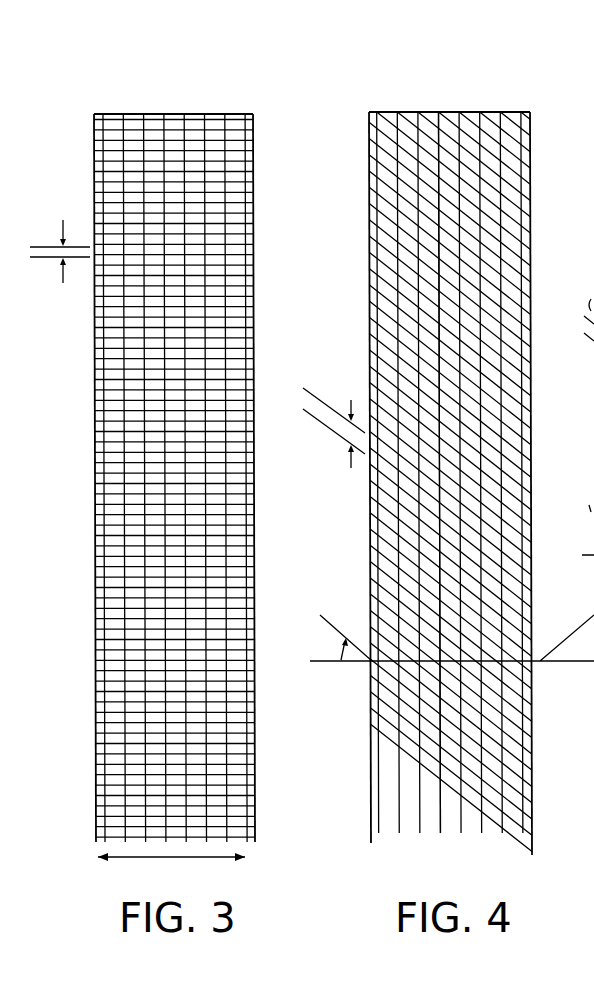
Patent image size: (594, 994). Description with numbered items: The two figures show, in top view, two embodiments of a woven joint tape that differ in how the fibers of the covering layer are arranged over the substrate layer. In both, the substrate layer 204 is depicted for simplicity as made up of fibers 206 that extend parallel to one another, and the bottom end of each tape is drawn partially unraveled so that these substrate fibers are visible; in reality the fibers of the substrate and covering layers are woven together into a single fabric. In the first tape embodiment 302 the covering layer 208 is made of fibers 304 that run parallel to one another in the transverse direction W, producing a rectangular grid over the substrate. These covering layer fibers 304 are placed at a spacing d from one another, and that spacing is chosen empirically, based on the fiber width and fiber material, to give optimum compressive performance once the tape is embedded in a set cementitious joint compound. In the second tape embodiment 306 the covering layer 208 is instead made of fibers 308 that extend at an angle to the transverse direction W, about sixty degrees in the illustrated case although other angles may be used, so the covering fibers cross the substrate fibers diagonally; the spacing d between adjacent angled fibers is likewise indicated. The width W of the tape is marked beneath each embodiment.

In FIG. 3, the first tape embodiment 302 is at (200, 92).
In FIG. 3, the covering layer fibers 304 is at (235, 114).
In FIG. 4, the second tape embodiment 306 is at (478, 82).
In FIG. 4, the covering layer fibers 308 is at (523, 283).
In FIG. 3, the covering layer 208 is at (270, 216).
In FIG. 4, the covering layer 208 is at (549, 231).
In FIG. 3, the fibers 206 is at (104, 790).
In FIG. 4, the fibers 206 is at (440, 822).
In FIG. 3, the substrate layer 204 is at (358, 819).
In FIG. 4, the substrate layer 204 is at (358, 819).
In FIG. 3, the spacing d is at (60, 237).
In FIG. 4, the spacing d is at (350, 400).
In FIG. 3, the transverse direction W is at (171, 872).
In FIG. 4, the transverse direction W is at (578, 664).